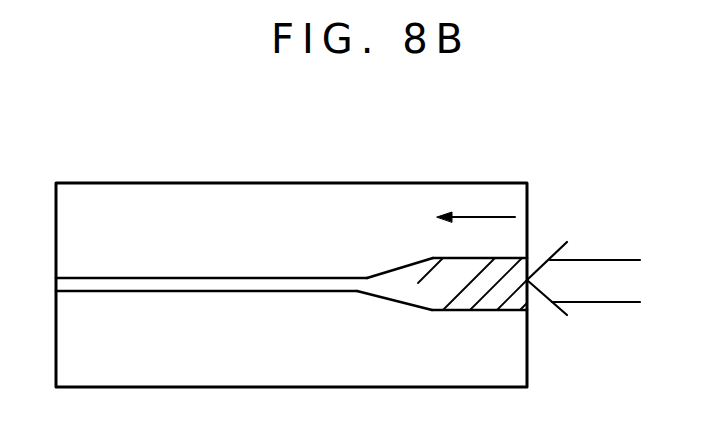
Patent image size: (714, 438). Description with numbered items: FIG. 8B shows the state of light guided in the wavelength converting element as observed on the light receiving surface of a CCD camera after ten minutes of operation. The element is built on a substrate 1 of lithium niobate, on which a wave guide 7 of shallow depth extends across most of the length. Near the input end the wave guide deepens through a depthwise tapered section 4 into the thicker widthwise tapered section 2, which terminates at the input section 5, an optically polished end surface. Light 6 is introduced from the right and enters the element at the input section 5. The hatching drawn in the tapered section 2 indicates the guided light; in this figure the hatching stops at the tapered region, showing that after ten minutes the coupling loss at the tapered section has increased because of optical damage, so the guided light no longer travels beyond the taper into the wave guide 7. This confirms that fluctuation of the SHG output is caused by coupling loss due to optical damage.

The substrate 1 is at (512, 352).
The widthwise tapered section 2 is at (443, 257).
The depthwise tapered section 4 is at (368, 277).
The input section 5 is at (531, 262).
The incident light beam 6 is at (612, 281).
The wave guide 7 is at (98, 277).